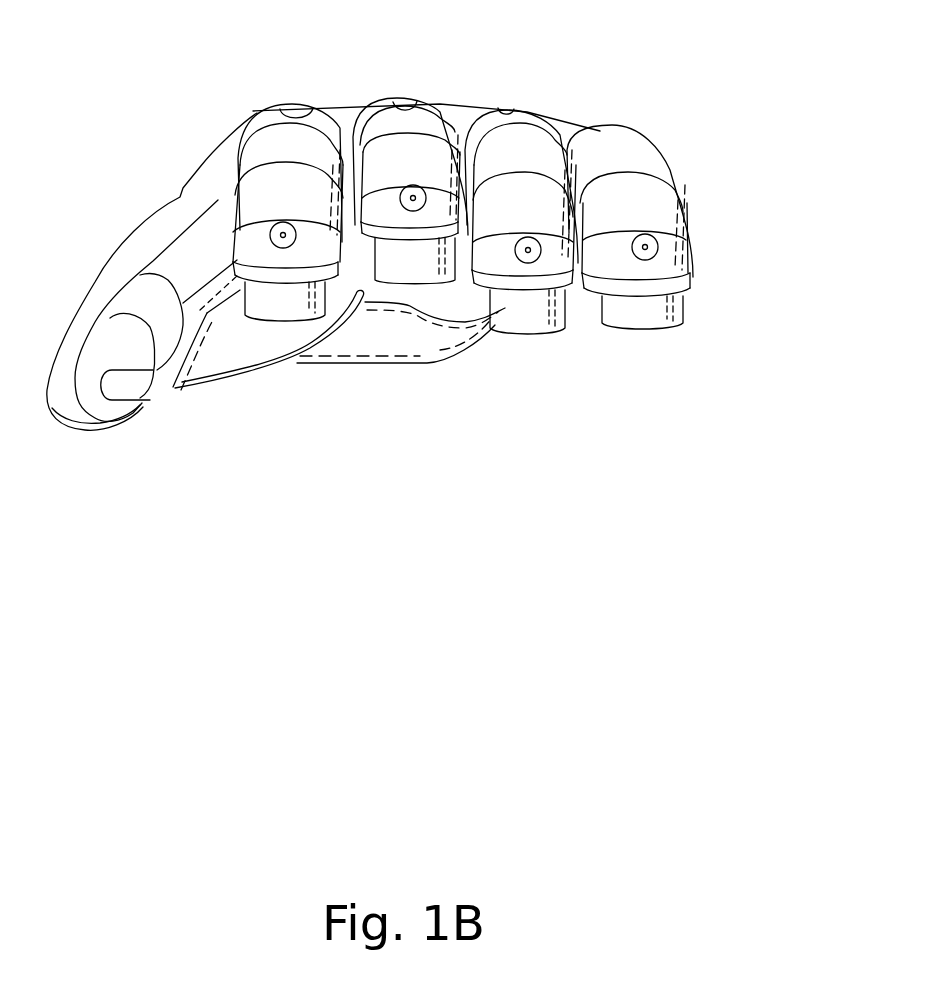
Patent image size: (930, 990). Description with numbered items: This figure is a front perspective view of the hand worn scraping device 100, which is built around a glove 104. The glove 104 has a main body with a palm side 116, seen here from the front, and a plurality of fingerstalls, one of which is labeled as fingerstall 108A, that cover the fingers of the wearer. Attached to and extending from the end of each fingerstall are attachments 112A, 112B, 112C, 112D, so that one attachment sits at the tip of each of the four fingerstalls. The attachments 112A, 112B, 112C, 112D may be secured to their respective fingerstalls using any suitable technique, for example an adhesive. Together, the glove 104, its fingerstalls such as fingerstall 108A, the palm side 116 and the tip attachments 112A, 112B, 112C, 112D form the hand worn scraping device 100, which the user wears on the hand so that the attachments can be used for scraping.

The hand worn scraping device 100 is at (683, 92).
The glove 104 is at (233, 99).
The fingerstall 108A is at (348, 142).
The attachment 112A is at (289, 321).
The attachment 112B is at (423, 287).
The attachment 112C is at (535, 343).
The attachment 112D is at (652, 340).
The palm side 116 is at (240, 402).